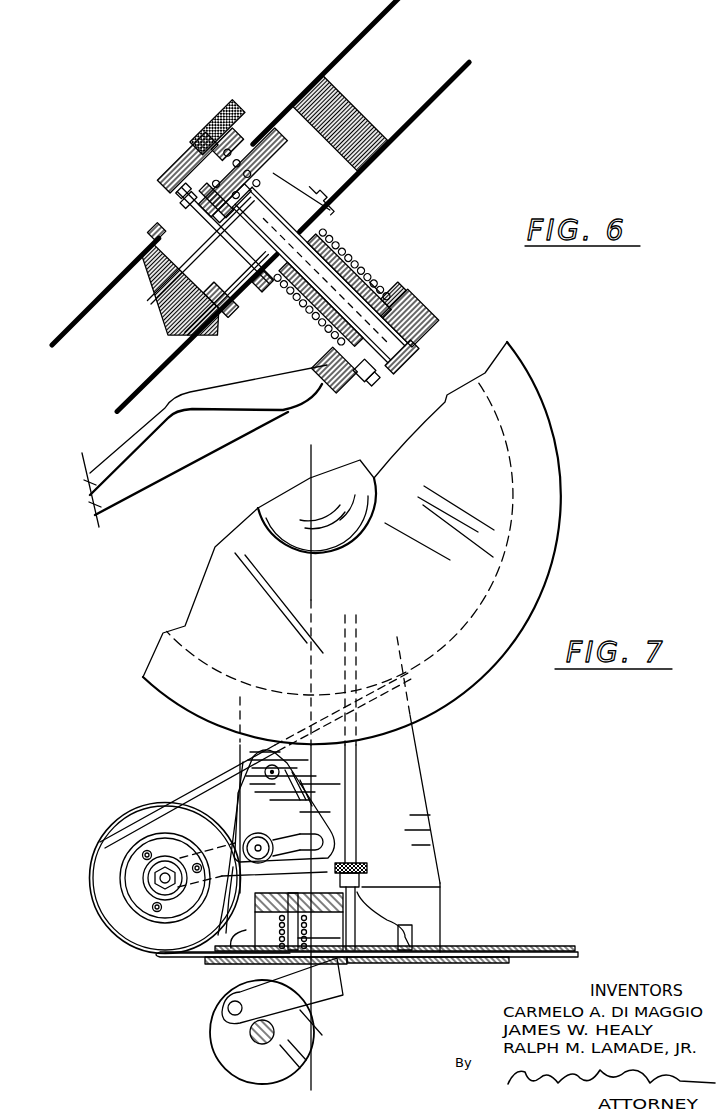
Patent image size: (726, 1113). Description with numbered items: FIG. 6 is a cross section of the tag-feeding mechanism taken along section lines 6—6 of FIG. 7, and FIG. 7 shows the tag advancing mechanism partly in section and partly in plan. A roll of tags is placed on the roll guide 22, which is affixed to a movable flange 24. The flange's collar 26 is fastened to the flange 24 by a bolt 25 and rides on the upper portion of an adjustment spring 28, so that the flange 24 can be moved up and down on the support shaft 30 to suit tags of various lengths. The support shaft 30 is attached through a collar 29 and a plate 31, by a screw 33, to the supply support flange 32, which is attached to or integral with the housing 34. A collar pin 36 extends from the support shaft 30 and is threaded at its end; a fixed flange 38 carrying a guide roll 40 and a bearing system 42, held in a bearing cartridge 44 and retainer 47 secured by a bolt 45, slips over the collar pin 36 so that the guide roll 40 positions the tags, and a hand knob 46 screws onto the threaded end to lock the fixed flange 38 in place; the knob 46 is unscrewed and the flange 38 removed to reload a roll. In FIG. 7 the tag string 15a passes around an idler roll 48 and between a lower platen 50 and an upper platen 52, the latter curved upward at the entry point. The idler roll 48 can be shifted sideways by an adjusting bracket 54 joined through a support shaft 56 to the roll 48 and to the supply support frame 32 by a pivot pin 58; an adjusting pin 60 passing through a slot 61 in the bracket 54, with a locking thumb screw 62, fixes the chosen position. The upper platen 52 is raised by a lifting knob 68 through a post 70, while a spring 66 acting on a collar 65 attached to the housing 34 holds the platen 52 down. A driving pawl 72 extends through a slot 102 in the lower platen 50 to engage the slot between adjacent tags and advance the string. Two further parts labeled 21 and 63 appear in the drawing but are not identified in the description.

In FIG. 7, the section line 6 is at (311, 445).
In FIG. 7, the tag string 15a is at (165, 800).
In FIG. 6, the hub boss 21 is at (357, 117).
In FIG. 6, the roll guide 22 is at (213, 300).
In FIG. 6, the movable flange 24 is at (425, 107).
In FIG. 6, the bolt 25 is at (266, 288).
In FIG. 6, the collar 26 is at (339, 208).
In FIG. 6, the adjustment spring 28 is at (343, 249).
In FIG. 6, the collar 29 is at (401, 288).
In FIG. 6, the support shaft 30 is at (378, 281).
In FIG. 6, the plate 31 is at (404, 325).
In FIG. 6, the supply support flange 32 is at (278, 393).
In FIG. 7, the supply support flange 32 is at (426, 800).
In FIG. 6, the screw 33 is at (375, 378).
In FIG. 7, the housing 34 is at (441, 883).
In FIG. 6, the collar pin 36 is at (234, 215).
In FIG. 6, the fixed flange 38 is at (324, 72).
In FIG. 7, the fixed flange 38 is at (560, 500).
In FIG. 6, the guide roll 40 is at (152, 247).
In FIG. 6, the bearing system 42 is at (205, 168).
In FIG. 6, the bearing cartridge 44 is at (180, 207).
In FIG. 6, the bolt 45 is at (180, 197).
In FIG. 6, the hand knob 46 is at (214, 123).
In FIG. 6, the retainer 47 is at (237, 147).
In FIG. 7, the idler roll 48 is at (137, 921).
In FIG. 7, the lower platen 50 is at (213, 962).
In FIG. 7, the upper platen 52 is at (234, 941).
In FIG. 7, the adjusting bracket 54 is at (312, 778).
In FIG. 7, the support shaft 56 is at (162, 877).
In FIG. 7, the pivot pin 58 is at (271, 765).
In FIG. 7, the adjusting pin 60 is at (243, 838).
In FIG. 7, the slot 61 is at (297, 823).
In FIG. 7, the locking thumb screw 62 is at (252, 834).
In FIG. 7, the guide rod 63 is at (295, 893).
In FIG. 7, the collar 65 is at (320, 930).
In FIG. 7, the spring 66 is at (300, 938).
In FIG. 7, the lifting knob 68 is at (358, 867).
In FIG. 7, the post 70 is at (354, 887).
In FIG. 7, the driving pawl 72 is at (327, 1003).
In FIG. 7, the slot 102 is at (363, 960).